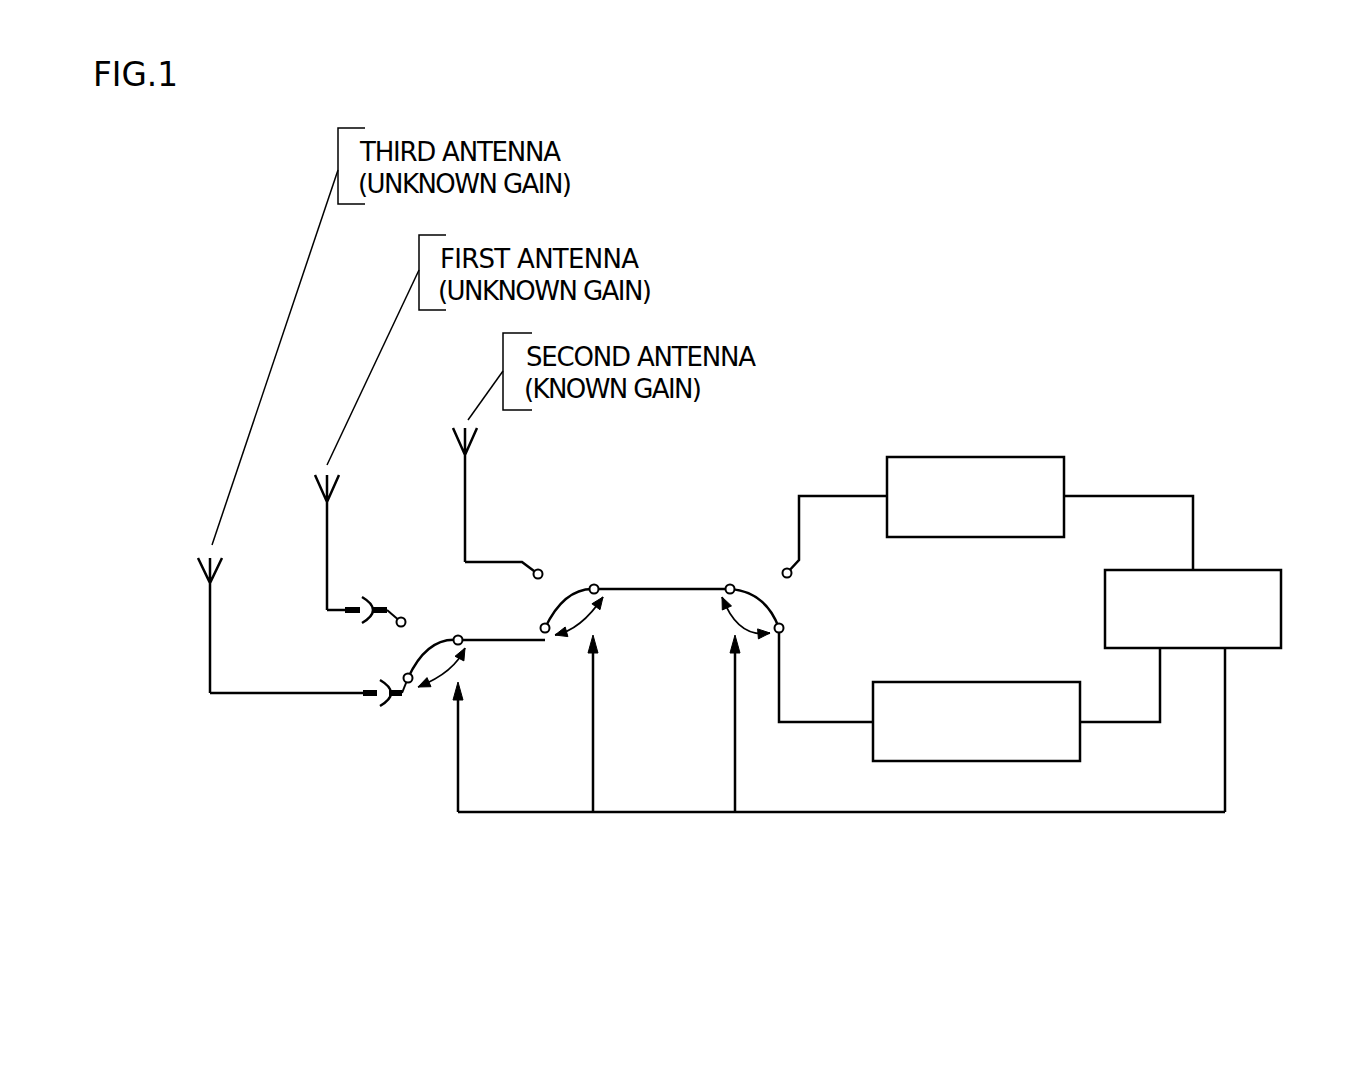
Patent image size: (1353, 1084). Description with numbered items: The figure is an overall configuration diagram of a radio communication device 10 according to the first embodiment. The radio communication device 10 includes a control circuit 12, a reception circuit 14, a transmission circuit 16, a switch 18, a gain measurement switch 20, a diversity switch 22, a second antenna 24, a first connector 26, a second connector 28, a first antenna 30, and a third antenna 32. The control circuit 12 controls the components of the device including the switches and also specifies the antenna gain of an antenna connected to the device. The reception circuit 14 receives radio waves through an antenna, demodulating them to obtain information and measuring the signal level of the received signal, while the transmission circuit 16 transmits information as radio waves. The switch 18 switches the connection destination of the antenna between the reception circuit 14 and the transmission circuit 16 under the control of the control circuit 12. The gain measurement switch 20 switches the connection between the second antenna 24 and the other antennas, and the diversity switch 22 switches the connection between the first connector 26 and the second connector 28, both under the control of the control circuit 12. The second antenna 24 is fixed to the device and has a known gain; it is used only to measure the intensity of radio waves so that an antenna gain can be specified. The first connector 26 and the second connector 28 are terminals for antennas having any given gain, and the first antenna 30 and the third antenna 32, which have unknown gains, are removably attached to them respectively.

The radio communication device 10 is at (827, 857).
The control circuit 12 is at (1240, 570).
The reception circuit 14 is at (1023, 457).
The transmission circuit 16 is at (1023, 682).
The switch 18 is at (775, 608).
The gain measurement switch 20 is at (553, 607).
The diversity switch 22 is at (413, 658).
The second antenna 24 is at (453, 439).
The first connector 26 is at (358, 600).
The second connector 28 is at (371, 684).
The first antenna 30 is at (337, 485).
The third antenna 32 is at (202, 572).